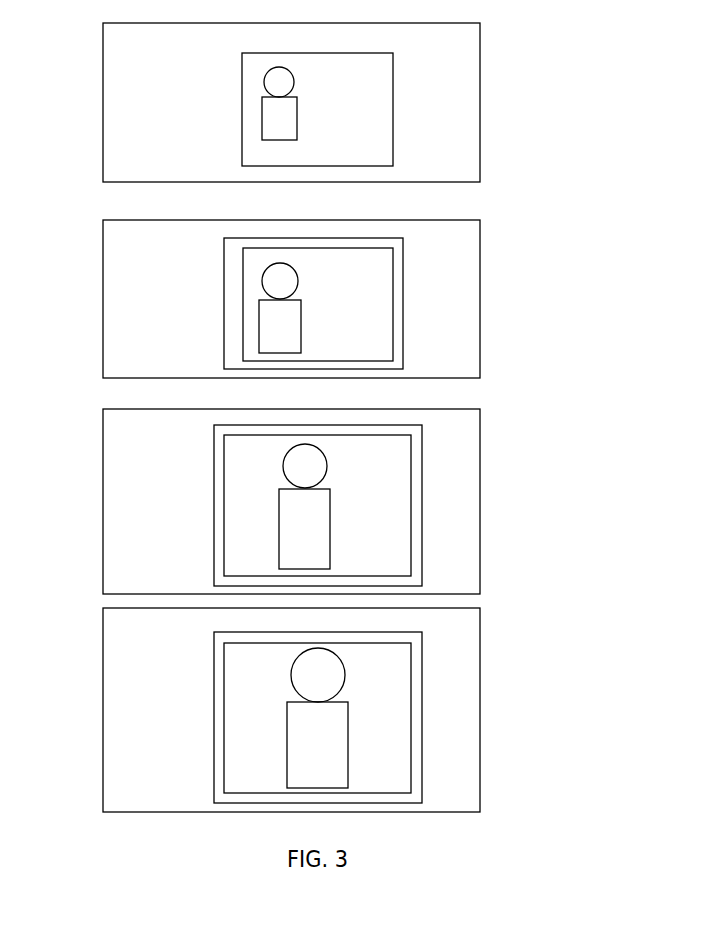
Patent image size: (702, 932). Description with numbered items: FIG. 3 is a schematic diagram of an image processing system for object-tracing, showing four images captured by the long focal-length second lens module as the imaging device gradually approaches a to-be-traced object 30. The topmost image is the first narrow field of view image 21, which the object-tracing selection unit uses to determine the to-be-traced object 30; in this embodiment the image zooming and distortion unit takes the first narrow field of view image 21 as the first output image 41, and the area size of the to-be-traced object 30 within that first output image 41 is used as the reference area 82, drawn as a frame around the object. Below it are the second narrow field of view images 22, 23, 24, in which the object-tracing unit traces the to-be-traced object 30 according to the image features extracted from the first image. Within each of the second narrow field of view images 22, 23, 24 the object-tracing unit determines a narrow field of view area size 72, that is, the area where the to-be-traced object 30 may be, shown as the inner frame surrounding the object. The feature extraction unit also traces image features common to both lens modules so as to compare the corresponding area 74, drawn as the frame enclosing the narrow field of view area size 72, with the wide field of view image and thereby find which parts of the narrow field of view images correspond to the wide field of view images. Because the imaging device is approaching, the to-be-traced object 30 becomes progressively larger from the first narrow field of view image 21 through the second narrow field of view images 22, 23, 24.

The first narrow field of view image 21 is at (339, 102).
The first output image 41 is at (481, 92).
The reference area 82 is at (393, 140).
The to-be-traced object 30 is at (262, 118).
The second narrow field of view image 22 is at (481, 267).
The second narrow field of view image 23 is at (481, 469).
The second narrow field of view image 24 is at (481, 679).
The narrow field of view area size 72 is at (393, 317).
The corresponding area 74 is at (224, 347).